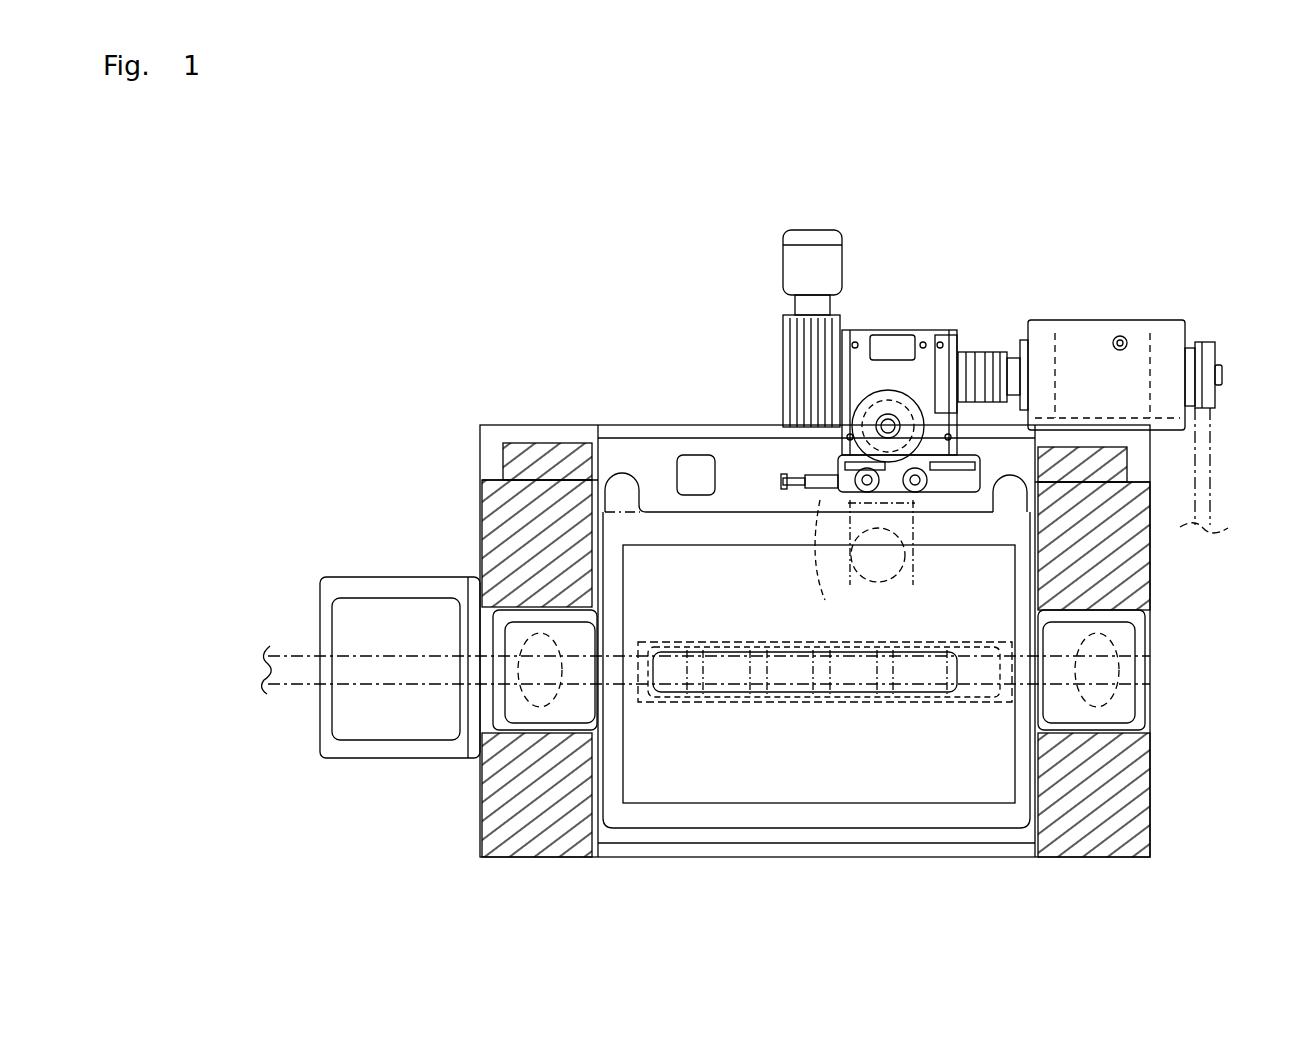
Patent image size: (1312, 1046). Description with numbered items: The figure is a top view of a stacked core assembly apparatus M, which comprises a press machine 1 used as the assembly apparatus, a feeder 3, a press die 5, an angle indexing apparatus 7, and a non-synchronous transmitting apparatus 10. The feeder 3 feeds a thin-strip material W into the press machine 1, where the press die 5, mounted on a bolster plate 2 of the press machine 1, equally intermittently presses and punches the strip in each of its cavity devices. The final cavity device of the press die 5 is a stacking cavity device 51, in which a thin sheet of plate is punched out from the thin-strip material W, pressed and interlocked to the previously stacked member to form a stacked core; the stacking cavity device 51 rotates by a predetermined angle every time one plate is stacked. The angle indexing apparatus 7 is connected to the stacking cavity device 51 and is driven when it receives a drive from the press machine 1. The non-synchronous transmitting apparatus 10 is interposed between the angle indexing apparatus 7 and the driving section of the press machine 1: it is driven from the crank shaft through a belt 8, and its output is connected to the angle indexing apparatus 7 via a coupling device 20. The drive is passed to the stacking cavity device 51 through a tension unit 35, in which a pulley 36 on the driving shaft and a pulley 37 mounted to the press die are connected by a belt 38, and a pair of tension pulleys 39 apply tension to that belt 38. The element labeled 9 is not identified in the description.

The stacked core assembly apparatus M is at (660, 292).
The press machine 1 is at (1125, 795).
The bolster plate 2 is at (956, 835).
The feeder 3 is at (400, 620).
The press die 5 is at (746, 808).
The angle indexing apparatus 7 is at (867, 410).
The belt 8 is at (1212, 472).
The pulley 9 is at (1200, 358).
The non-synchronous transmitting apparatus 10 is at (1117, 290).
The coupling device 20 is at (987, 328).
The tension unit 35 is at (806, 456).
The pulley 36 is at (872, 407).
The pulley 37 is at (865, 560).
The belt 38 is at (913, 500).
The tension pulley 39 is at (845, 494).
The stacking cavity device 51 is at (915, 690).
The thin-strip material W is at (633, 655).